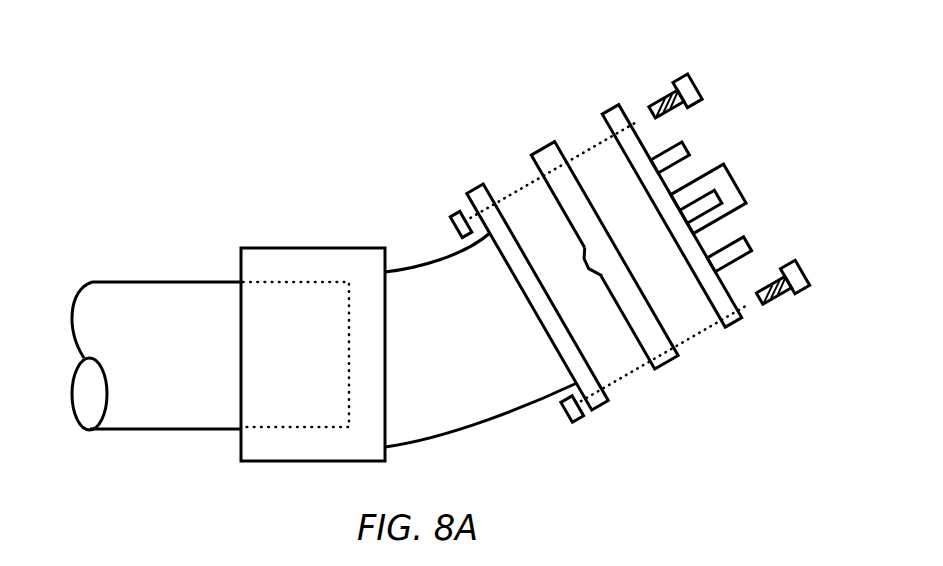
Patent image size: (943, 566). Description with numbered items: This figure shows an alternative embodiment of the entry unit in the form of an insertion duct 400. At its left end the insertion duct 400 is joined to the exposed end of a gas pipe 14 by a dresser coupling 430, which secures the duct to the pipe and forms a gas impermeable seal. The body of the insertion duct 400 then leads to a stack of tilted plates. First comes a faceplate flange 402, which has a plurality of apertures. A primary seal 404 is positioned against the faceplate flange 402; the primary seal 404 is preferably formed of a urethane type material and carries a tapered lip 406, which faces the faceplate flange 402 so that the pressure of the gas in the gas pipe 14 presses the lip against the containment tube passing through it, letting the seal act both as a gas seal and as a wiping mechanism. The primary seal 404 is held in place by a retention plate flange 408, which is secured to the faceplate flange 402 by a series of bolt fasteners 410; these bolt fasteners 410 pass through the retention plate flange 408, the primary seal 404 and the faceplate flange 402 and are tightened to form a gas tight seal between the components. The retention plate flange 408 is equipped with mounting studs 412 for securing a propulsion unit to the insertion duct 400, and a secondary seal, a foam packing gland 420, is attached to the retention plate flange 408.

The gas pipe 14 is at (222, 430).
The insertion duct 400 is at (297, 202).
The faceplate flange 402 is at (600, 406).
The primary seal 404 is at (670, 366).
The tapered lip 406 is at (582, 263).
The retention plate flange 408 is at (745, 325).
The bolt fasteners 410 is at (683, 70).
The mounting studs 412 is at (683, 140).
The foam packing gland 420 is at (737, 185).
The dresser coupling 430 is at (314, 461).